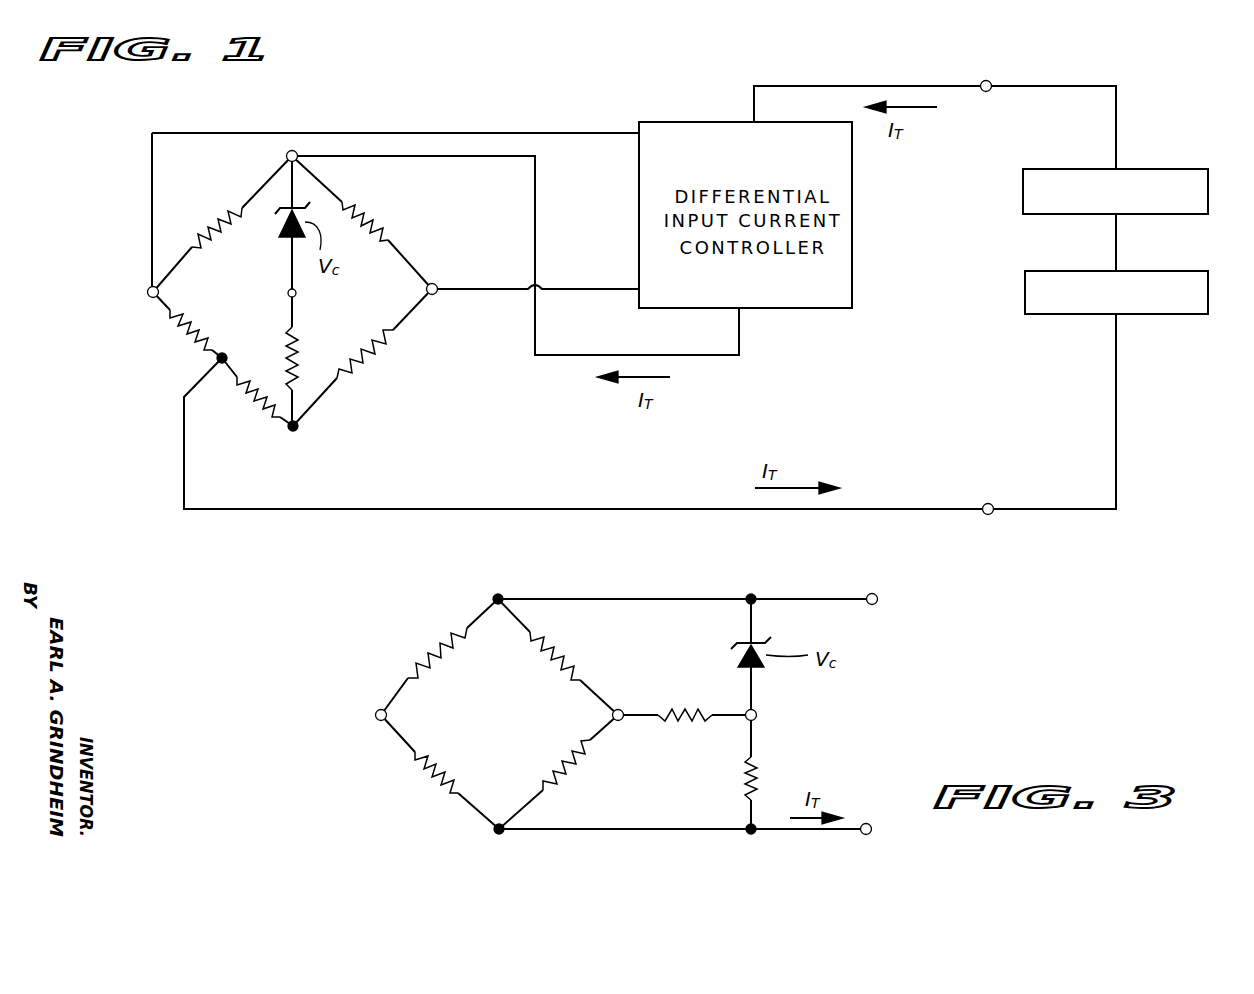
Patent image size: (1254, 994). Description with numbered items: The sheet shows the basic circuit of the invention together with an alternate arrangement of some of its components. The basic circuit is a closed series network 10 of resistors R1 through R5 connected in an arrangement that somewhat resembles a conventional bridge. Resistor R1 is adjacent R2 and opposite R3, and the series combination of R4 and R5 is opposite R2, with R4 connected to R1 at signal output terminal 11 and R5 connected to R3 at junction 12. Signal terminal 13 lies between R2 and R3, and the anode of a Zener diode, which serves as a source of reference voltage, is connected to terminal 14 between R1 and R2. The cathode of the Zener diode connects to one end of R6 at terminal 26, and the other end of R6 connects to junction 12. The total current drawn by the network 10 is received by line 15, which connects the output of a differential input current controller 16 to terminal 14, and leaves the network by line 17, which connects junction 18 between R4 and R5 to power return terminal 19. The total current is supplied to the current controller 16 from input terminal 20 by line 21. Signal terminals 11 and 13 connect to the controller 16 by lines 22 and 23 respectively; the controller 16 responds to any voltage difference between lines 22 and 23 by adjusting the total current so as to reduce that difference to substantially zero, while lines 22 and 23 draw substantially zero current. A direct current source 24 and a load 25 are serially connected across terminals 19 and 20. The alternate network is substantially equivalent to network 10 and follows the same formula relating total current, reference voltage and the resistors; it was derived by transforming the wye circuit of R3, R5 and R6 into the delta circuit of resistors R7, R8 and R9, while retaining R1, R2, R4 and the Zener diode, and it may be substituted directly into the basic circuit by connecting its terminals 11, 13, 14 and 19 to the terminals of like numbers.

In FIG. 1, the closed series network 10 is at (176, 376).
In FIG. 1, the signal output terminal 11 is at (148, 292).
In FIG. 3, the signal output terminal 11 is at (375, 715).
In FIG. 1, the junction 12 is at (294, 432).
In FIG. 1, the signal terminal 13 is at (434, 295).
In FIG. 3, the signal terminal 13 is at (612, 715).
In FIG. 1, the terminal 14 is at (293, 151).
In FIG. 3, the terminal 14 is at (878, 596).
In FIG. 1, the line 15 is at (540, 229).
In FIG. 1, the differential input current controller 16 is at (852, 280).
In FIG. 1, the line 17 is at (605, 507).
In FIG. 1, the junction 18 is at (222, 353).
In FIG. 1, the power return terminal 19 is at (988, 503).
In FIG. 3, the power return terminal 19 is at (868, 823).
In FIG. 1, the input terminal 20 is at (991, 83).
In FIG. 1, the line 21 is at (754, 94).
In FIG. 1, the line 22 is at (558, 133).
In FIG. 1, the line 23 is at (597, 289).
In FIG. 1, the direct current source 24 is at (1180, 169).
In FIG. 1, the load 25 is at (1170, 315).
In FIG. 1, the terminal 26 is at (288, 293).
In FIG. 3, the terminal 26 is at (760, 712).
In FIG. 1, the resistor R1 is at (232, 205).
In FIG. 3, the resistor R1 is at (440, 650).
In FIG. 1, the resistor R2 is at (374, 229).
In FIG. 3, the resistor R2 is at (560, 656).
In FIG. 1, the resistor R3 is at (370, 356).
In FIG. 1, the resistor R4 is at (190, 345).
In FIG. 3, the resistor R4 is at (455, 786).
In FIG. 1, the resistor R5 is at (256, 410).
In FIG. 1, the resistor R6 is at (308, 341).
In FIG. 3, the resistor R7 is at (580, 759).
In FIG. 3, the resistor R8 is at (700, 726).
In FIG. 3, the resistor R9 is at (760, 771).